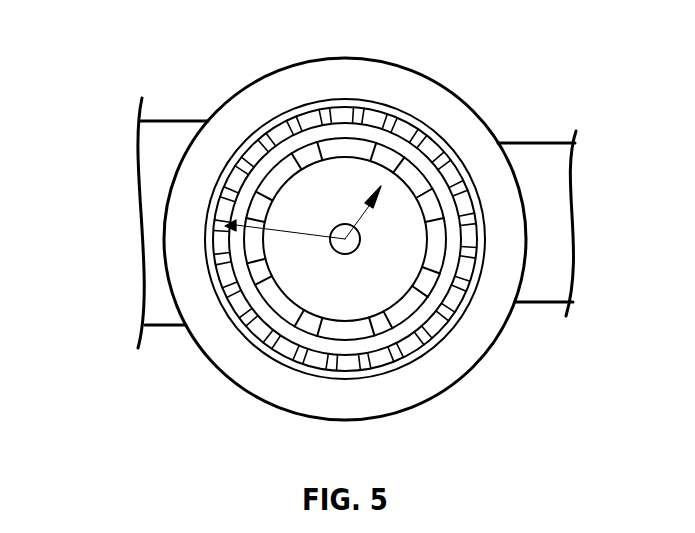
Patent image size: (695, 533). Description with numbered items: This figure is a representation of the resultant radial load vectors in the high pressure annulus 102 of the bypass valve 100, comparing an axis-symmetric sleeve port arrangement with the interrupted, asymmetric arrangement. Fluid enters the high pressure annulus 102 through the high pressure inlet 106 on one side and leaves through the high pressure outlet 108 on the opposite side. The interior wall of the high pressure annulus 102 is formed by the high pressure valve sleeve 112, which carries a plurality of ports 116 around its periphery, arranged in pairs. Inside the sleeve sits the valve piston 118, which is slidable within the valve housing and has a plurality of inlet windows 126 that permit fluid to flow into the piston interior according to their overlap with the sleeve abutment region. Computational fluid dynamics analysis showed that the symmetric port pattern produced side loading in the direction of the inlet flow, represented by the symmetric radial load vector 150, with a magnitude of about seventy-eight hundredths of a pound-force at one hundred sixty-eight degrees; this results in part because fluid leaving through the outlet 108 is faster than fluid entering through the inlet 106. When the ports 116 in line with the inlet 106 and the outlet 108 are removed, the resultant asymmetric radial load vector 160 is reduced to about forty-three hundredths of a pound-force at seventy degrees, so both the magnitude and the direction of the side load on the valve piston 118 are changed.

The bypass valve 100 is at (142, 52).
The high pressure annulus 102 is at (213, 364).
The high pressure inlet 106 is at (168, 120).
The high pressure outlet 108 is at (545, 143).
The high pressure valve sleeve 112 is at (453, 303).
The ports 116 is at (412, 350).
The valve piston 118 is at (438, 240).
The inlet windows 126 is at (400, 160).
The symmetric radial load vector 150 is at (292, 240).
The asymmetric radial load vector 160 is at (362, 216).